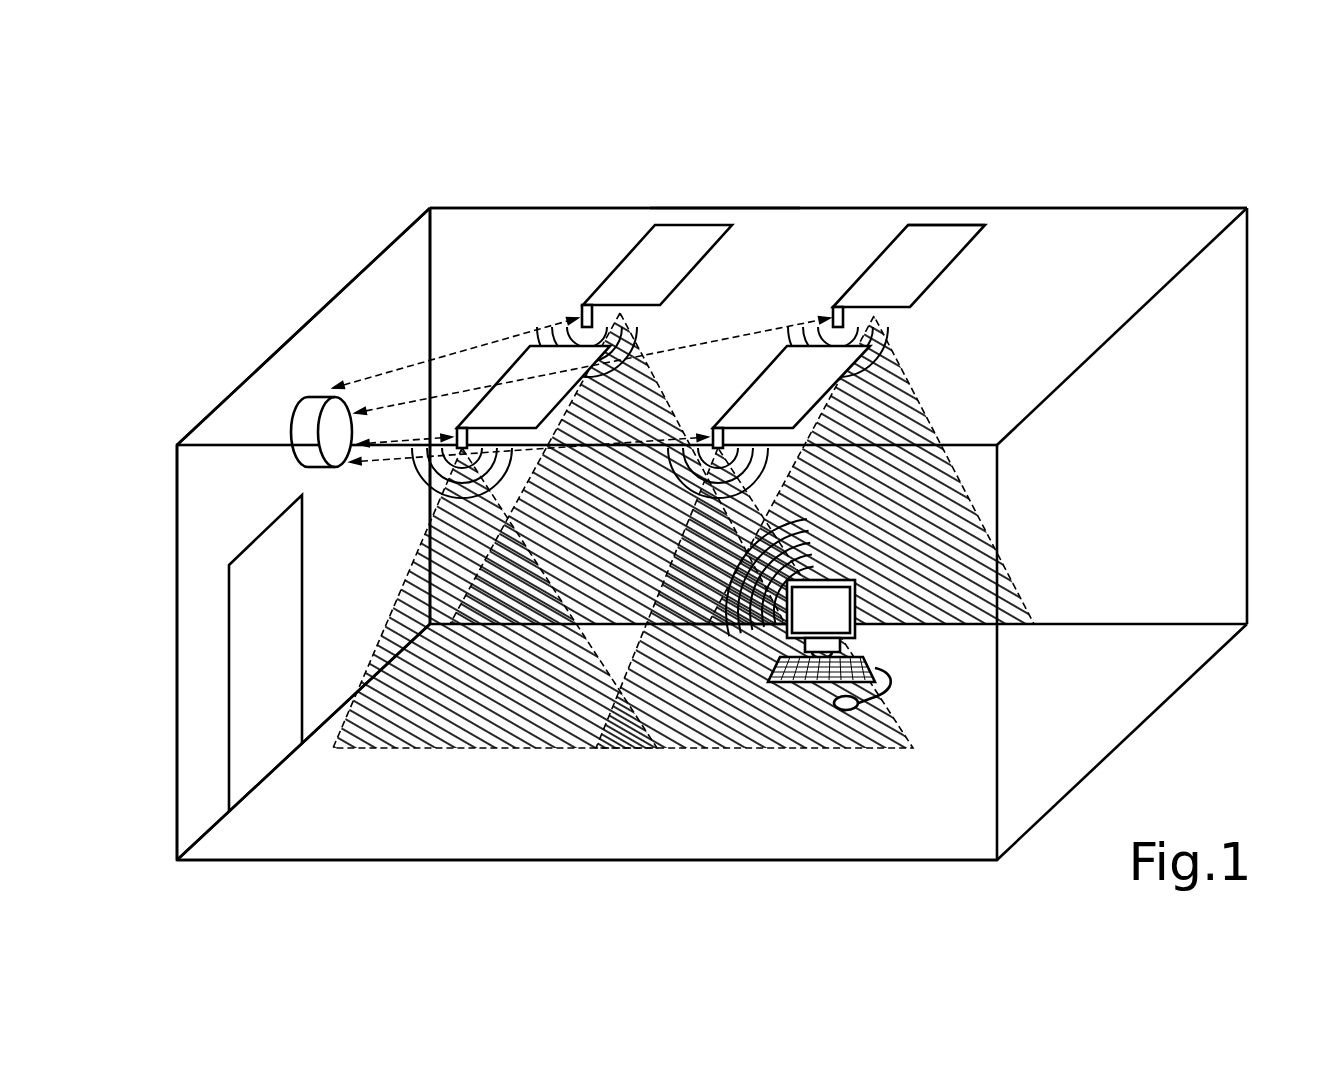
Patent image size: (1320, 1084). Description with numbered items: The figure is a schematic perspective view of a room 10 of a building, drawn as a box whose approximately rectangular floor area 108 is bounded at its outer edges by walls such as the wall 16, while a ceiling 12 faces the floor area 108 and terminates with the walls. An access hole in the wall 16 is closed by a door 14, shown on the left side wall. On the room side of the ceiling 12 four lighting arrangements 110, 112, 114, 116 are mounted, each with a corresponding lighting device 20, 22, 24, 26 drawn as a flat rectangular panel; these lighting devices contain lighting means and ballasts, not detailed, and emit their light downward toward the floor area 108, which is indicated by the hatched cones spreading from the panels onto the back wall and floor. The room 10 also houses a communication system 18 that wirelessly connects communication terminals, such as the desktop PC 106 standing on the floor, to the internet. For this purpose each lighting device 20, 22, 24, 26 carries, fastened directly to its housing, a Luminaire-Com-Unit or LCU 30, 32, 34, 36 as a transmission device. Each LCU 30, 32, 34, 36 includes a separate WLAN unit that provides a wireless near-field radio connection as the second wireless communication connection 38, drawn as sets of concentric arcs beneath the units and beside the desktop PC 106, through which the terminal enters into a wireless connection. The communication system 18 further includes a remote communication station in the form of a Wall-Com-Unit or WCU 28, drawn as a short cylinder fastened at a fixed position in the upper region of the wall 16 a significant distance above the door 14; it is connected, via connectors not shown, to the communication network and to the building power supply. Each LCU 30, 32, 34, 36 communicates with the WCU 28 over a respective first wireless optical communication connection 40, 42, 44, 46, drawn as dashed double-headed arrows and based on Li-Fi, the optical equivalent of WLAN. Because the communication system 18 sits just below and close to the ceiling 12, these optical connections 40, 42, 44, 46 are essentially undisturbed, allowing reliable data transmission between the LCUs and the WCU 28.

The room 10 is at (1168, 166).
The ceiling 12 is at (1093, 216).
The door 14 is at (245, 644).
The wall 16 is at (235, 524).
The communication system 18 is at (265, 319).
The lighting device 20 is at (660, 232).
The lighting device 22 is at (918, 235).
The lighting device 24 is at (538, 358).
The lighting device 26 is at (793, 356).
The Wall-Com-Unit (WCU) 28 is at (307, 420).
The Luminaire-Com-Unit (LCU) 30 is at (586, 303).
The Luminaire-Com-Unit (LCU) 32 is at (838, 305).
The Luminaire-Com-Unit (LCU) 34 is at (440, 470).
The Luminaire-Com-Unit (LCU) 36 is at (718, 450).
The second wireless communication connection 38 is at (638, 350).
The first wireless optical communication connection 40 is at (350, 387).
The first wireless optical communication connection 42 is at (397, 406).
The first wireless optical communication connection 44 is at (430, 440).
The first wireless optical communication connection 46 is at (378, 462).
The desktop PC 106 is at (810, 685).
The floor area 108 is at (762, 815).
The lighting arrangement 110 is at (714, 198).
The lighting arrangement 112 is at (952, 238).
The lighting arrangement 114 is at (461, 310).
The lighting arrangement 116 is at (750, 373).